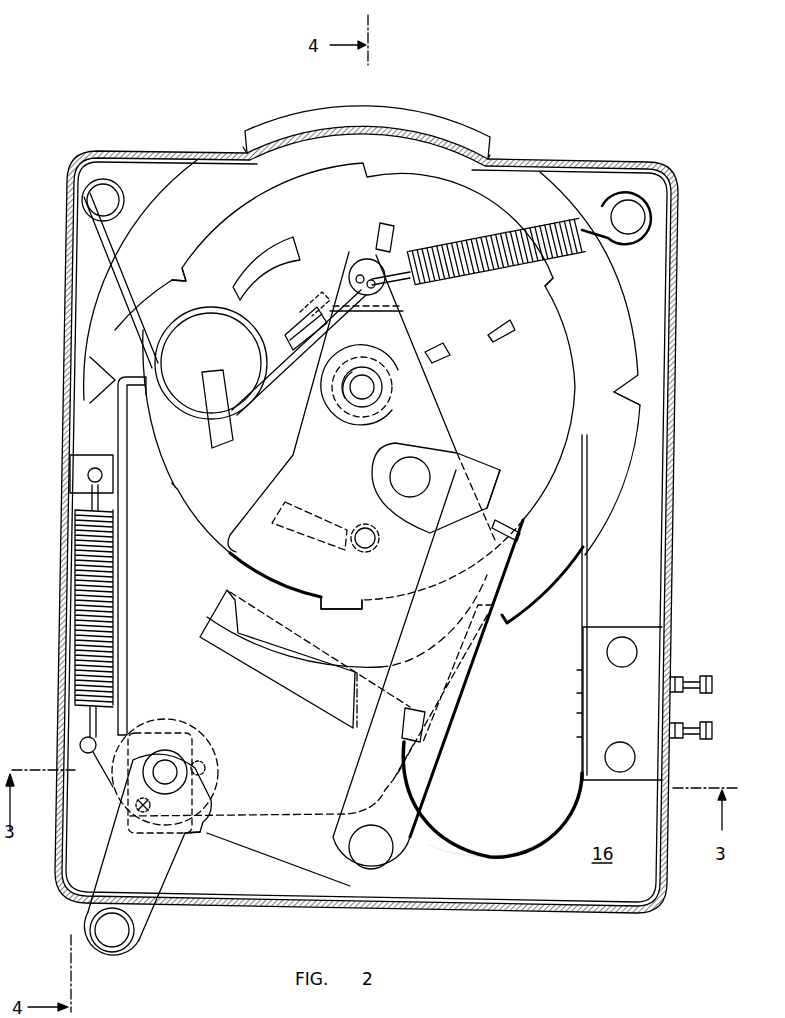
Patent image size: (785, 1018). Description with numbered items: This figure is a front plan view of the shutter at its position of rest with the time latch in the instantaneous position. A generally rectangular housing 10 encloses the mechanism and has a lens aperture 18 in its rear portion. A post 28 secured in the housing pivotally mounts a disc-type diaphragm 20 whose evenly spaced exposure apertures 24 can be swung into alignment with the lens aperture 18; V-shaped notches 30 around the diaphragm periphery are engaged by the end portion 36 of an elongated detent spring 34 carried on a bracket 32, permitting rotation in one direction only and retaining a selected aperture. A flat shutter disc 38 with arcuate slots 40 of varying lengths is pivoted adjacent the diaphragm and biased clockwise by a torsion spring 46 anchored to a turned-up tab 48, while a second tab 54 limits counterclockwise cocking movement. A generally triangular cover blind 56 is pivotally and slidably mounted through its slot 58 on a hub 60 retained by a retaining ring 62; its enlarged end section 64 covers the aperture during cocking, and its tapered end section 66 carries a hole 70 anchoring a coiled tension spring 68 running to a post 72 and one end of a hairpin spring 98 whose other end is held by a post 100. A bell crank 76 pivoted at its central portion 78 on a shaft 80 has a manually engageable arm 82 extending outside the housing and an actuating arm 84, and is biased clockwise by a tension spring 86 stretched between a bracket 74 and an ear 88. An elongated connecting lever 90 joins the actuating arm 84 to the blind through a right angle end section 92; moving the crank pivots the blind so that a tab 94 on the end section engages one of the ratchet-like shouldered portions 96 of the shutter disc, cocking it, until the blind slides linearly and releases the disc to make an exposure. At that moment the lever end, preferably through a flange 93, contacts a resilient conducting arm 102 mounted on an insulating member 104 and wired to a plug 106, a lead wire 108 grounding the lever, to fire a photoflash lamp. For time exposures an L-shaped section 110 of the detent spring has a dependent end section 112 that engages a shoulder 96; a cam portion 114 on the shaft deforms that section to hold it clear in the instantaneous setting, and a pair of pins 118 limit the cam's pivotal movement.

The housing 10 is at (464, 905).
The lens aperture 18 is at (356, 525).
The diaphragm 20 is at (362, 112).
The exposure apertures 24 is at (368, 553).
The post 28 is at (374, 386).
The V-shaped notches 30 is at (244, 148).
The bracket 32 is at (335, 728).
The detent spring 34 is at (272, 828).
The end portion 36 is at (498, 625).
The shutter disc 38 is at (571, 340).
The arcuate slots 40 is at (268, 257).
The torsion spring 46 is at (290, 330).
The tab 48 is at (310, 310).
The tab 54 is at (446, 356).
The cover blind 56 is at (448, 433).
The slot 58 is at (387, 360).
The hub 60 is at (362, 432).
The retaining ring 62 is at (352, 420).
The end section 64 is at (245, 555).
The tapered end section 66 is at (372, 262).
The tension spring 68 is at (522, 240).
The hole 70 is at (350, 275).
The post 72 is at (648, 219).
The bracket 74 is at (66, 468).
The bell crank 76 is at (147, 916).
The central portion 78 is at (196, 826).
The shaft 80 is at (172, 766).
The manually engageable arm 82 is at (92, 905).
The actuating arm 84 is at (316, 858).
The tension spring 86 is at (72, 627).
The ear 88 is at (70, 745).
The connecting lever 90 is at (432, 778).
The right angle end section 92 is at (490, 468).
The flange 93 is at (512, 518).
The tab 94 is at (340, 610).
The shouldered portions 96 is at (186, 274).
The hairpin spring 98 is at (262, 405).
The post 100 is at (82, 200).
The conducting arm 102 is at (590, 578).
The insulating member 104 is at (652, 652).
The plug 106 is at (702, 675).
The lead wire 108 is at (570, 820).
The L-shaped section 110 is at (133, 668).
The end section 112 is at (132, 378).
The cam portion 114 is at (160, 735).
The pins 118 is at (208, 766).